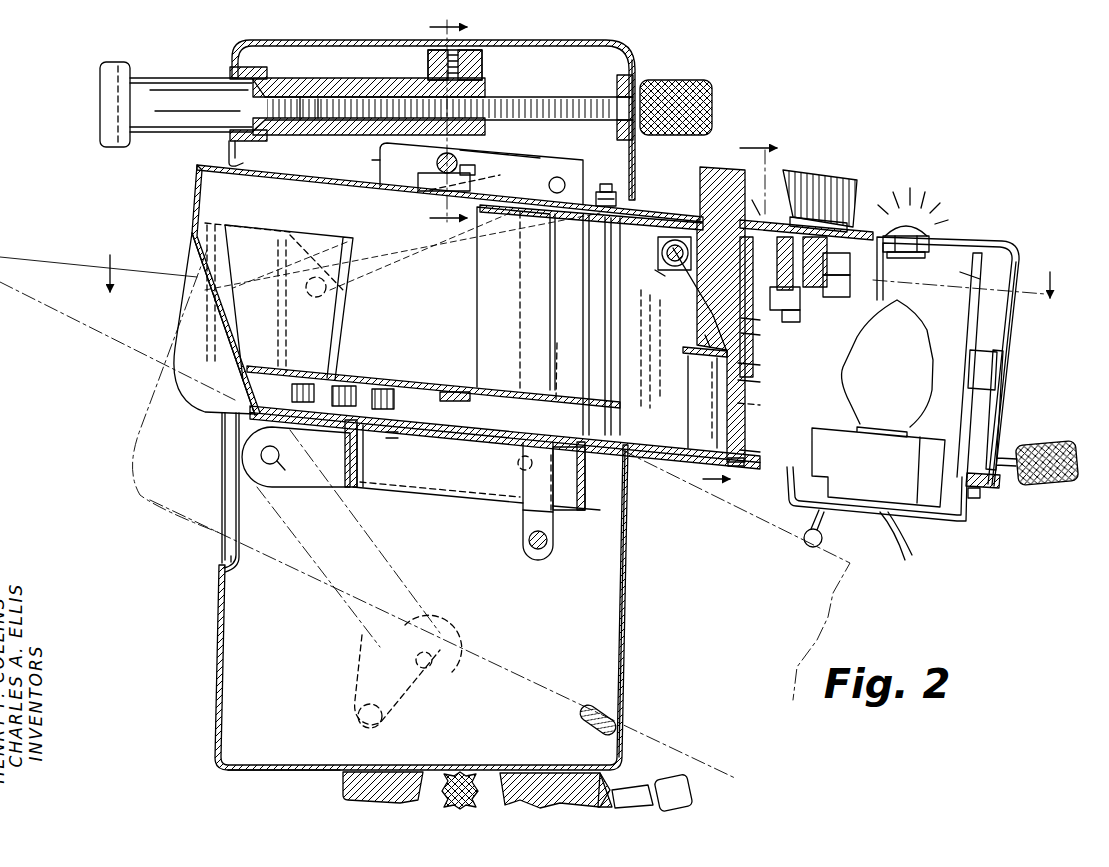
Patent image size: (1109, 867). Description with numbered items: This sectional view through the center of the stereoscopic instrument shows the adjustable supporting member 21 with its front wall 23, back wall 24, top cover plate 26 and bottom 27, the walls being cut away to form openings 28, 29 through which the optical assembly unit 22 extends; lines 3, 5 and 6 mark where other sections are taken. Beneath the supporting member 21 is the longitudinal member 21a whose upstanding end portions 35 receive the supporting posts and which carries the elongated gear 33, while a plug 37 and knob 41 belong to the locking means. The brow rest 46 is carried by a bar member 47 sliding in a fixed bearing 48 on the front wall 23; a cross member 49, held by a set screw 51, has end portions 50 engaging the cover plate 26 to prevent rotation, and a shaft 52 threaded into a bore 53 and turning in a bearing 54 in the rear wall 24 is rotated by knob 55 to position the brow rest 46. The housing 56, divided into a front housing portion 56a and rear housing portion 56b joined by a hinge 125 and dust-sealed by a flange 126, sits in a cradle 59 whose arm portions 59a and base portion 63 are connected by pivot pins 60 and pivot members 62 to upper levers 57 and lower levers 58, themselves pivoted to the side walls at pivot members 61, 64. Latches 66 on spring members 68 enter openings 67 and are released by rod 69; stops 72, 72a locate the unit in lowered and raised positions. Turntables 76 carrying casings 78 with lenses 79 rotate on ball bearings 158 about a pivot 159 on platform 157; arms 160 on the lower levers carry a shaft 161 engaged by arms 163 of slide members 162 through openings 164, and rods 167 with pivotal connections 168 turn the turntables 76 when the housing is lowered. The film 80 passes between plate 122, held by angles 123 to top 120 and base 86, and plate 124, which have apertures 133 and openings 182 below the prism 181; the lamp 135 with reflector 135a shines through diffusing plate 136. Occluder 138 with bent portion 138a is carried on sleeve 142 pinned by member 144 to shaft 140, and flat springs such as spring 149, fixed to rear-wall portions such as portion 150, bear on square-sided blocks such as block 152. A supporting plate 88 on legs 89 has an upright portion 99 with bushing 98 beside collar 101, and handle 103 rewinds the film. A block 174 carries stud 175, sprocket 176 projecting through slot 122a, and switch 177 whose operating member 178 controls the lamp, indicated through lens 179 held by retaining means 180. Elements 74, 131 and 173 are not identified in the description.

The section line 3- 3 is at (528, 266).
The section line 5- 5 is at (732, 308).
The section line 6- 6 is at (441, 123).
The adjustable supporting member 21 is at (211, 735).
The longitudinal member 21a is at (345, 784).
The optical assembly unit 22 is at (182, 270).
The front wall 23 is at (215, 649).
The back wall 24 is at (635, 162).
The top cover plate 26 is at (562, 43).
The bottom 27 is at (276, 772).
The front opening 28 is at (233, 557).
The rear opening 29 is at (623, 641).
The elongated gear 33 is at (480, 771).
The upstanding end portions 35 is at (612, 786).
The plug 37 is at (640, 785).
The knob 41 is at (690, 791).
The brow rest 46 is at (108, 92).
The bar member 47 is at (158, 80).
The fixed bearing 48 is at (256, 80).
The cross member 49 is at (482, 74).
The end portions 50 is at (472, 53).
The set screw 51 is at (432, 75).
The shaft 52 is at (552, 96).
The bore 53 is at (318, 96).
The bearing 54 is at (621, 78).
The knob 55 is at (700, 82).
The housing 56 is at (196, 167).
The front housing portion 56a is at (303, 172).
The rear housing portion 56b is at (1018, 326).
The upper levers 57 is at (473, 162).
The lower levers 58 is at (247, 454).
The cradle 59 is at (378, 162).
The arm portions 59a is at (505, 168).
The pivot pins 60 is at (560, 178).
The pivot members 61 is at (317, 262).
The pivot members 62 is at (517, 463).
The base portion 63 is at (346, 448).
The pivot members 64 is at (282, 460).
The latches 66 is at (418, 178).
The openings 67 is at (490, 185).
The spring members 68 is at (478, 149).
The rod 69 is at (436, 161).
The stop 72 is at (600, 707).
The stop 72a is at (630, 204).
The flange 74 is at (186, 299).
The turntable 76 is at (390, 384).
The casing 78 is at (233, 227).
The sphero-prism lenses 79 is at (290, 233).
The strip film 80 is at (742, 364).
The base 86 is at (779, 470).
The supporting plate 88 is at (985, 490).
The legs 89 is at (974, 499).
The bushing 98 is at (987, 358).
The upright portion 99 is at (1003, 409).
The collar 101 is at (983, 365).
The operating handle 103 is at (1064, 444).
The top 120 is at (987, 243).
The plate 122 is at (745, 398).
The slot 122a is at (690, 268).
The angles 123 is at (743, 451).
The second plate 124 is at (742, 381).
The hinge 125 is at (737, 466).
The flange 126 is at (781, 173).
The knob 131 is at (858, 181).
The left eye apertures 133 is at (742, 405).
The lamp 135 is at (915, 338).
The reflector 135a is at (972, 276).
The diffusing plate 136 is at (745, 335).
The left eye occluder 138 is at (582, 234).
The right-angled portion 138a is at (662, 317).
The shaft 140 is at (671, 272).
The sleeve 142 is at (665, 260).
The pin member 144 is at (660, 276).
The flat spring 149 is at (712, 362).
The rear wall portion 150 is at (718, 428).
The square-sided block 152 is at (661, 252).
The platform 157 is at (262, 405).
The ball bearings 158 is at (247, 377).
The central pivot 159 is at (308, 380).
The arm 160 is at (527, 530).
The shaft 161 is at (548, 545).
The slide members 162 is at (460, 392).
The arm 163 is at (530, 519).
The openings 164 is at (460, 451).
The rods 167 is at (392, 432).
The pivotal connection 168 is at (363, 442).
The column 173 is at (528, 311).
The block 174 is at (852, 235).
The headed stud 175 is at (808, 332).
The sprocket 176 is at (805, 308).
The switch 177 is at (845, 283).
The operating member 178 is at (845, 300).
The lens 179 is at (915, 214).
The retaining means 180 is at (926, 250).
The prism 181 is at (720, 301).
The openings 182 is at (744, 321).